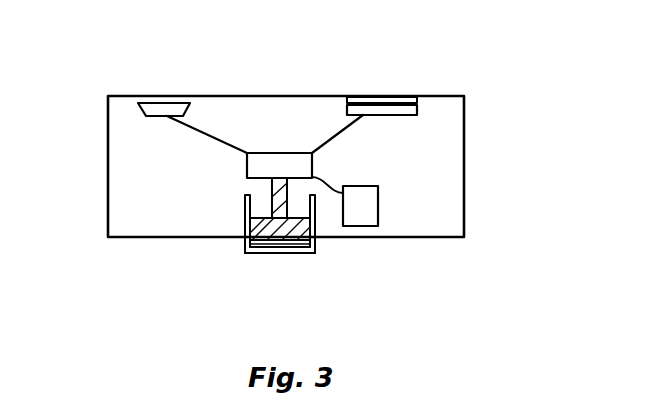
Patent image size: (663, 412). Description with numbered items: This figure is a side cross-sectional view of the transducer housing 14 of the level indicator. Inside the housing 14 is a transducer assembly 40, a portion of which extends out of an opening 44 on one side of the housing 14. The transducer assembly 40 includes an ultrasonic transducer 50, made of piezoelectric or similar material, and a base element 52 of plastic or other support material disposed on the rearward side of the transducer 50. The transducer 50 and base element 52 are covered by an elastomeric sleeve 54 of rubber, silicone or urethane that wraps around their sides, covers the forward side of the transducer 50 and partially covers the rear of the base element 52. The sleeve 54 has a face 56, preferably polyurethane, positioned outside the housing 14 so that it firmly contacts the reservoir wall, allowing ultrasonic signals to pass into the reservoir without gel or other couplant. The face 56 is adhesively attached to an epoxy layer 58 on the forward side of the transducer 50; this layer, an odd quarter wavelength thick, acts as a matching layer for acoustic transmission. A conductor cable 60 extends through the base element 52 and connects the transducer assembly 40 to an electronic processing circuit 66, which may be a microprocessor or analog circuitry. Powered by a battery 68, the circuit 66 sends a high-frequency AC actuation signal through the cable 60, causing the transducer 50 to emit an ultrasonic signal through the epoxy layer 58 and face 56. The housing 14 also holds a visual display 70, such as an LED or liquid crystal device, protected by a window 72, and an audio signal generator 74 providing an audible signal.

The transducer housing 14 is at (482, 154).
The transducer assembly 40 is at (230, 211).
The opening 44 is at (326, 243).
The ultrasonic transducer 50 is at (245, 249).
The base element 52 is at (302, 205).
The elastomeric sleeve 54 is at (315, 254).
The face 56 is at (287, 254).
The epoxy layer 58 is at (277, 253).
The conductor cable 60 is at (271, 187).
The electronic processing circuit 66 is at (272, 152).
The battery 68 is at (372, 203).
The visual display 70 is at (397, 110).
The window 72 is at (383, 86).
The audio signal generator 74 is at (162, 102).